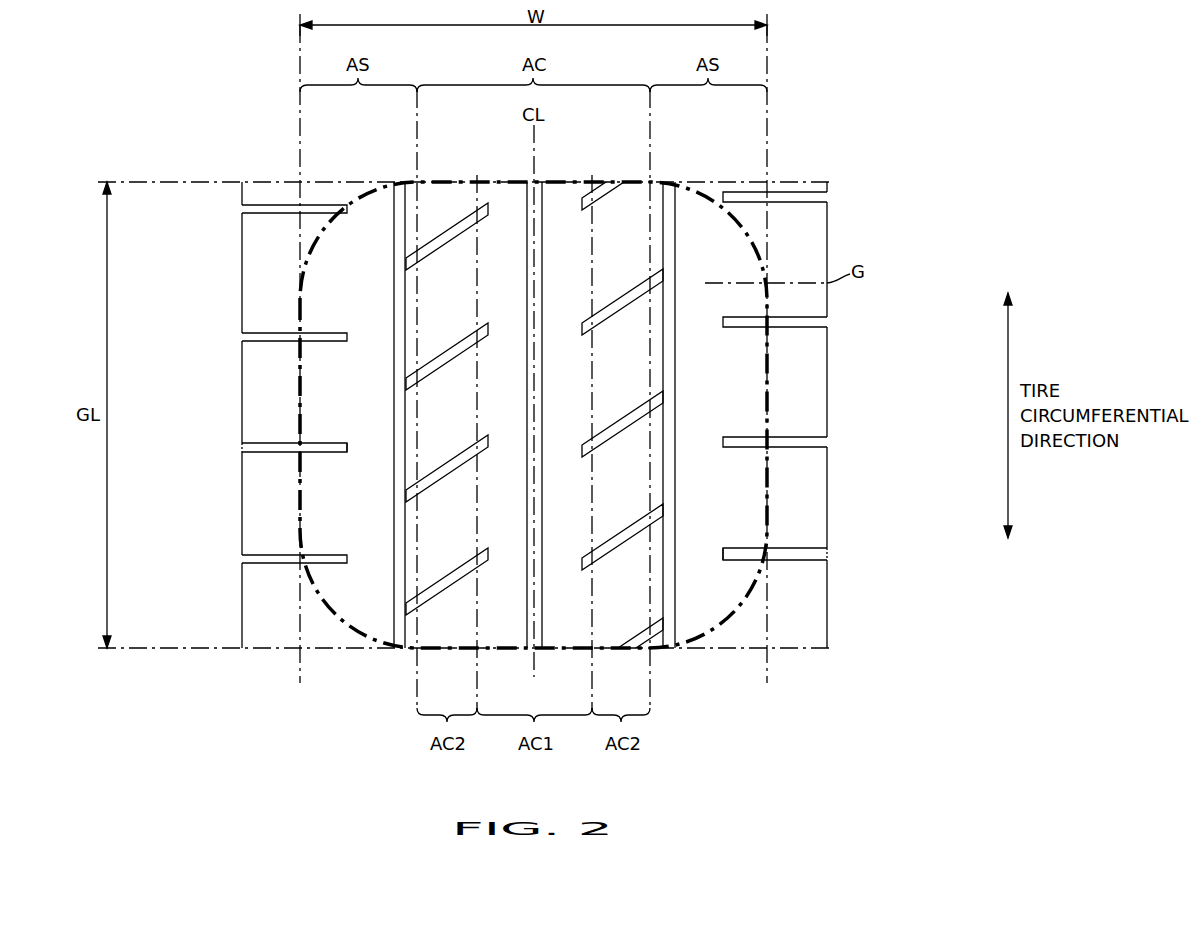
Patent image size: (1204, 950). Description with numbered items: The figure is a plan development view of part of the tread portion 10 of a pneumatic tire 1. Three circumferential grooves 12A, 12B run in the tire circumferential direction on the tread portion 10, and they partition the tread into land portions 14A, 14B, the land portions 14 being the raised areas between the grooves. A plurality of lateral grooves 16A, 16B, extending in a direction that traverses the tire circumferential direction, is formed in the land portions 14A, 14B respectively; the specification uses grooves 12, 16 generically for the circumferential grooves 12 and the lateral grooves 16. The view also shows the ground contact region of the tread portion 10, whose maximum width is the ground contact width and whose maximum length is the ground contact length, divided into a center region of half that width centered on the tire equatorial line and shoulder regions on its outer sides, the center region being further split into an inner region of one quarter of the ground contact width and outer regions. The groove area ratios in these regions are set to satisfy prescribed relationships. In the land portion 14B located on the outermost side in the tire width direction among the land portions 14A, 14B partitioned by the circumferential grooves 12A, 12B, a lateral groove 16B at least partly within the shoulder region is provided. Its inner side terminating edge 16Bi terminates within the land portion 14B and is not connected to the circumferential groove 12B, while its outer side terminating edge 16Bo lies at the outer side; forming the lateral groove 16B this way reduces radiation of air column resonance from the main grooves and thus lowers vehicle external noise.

The pneumatic tire 1 is at (966, 70).
The tread portion 10 is at (731, 400).
The circumferential groove 12 is at (532, 387).
The circumferential groove 12A is at (540, 228).
The circumferential groove 12B is at (393, 232).
The land portion 14 is at (573, 433).
The land portion 14A is at (440, 632).
The land portion 14B is at (343, 295).
The lateral groove 16 is at (555, 428).
The lateral groove 16A is at (438, 478).
The lateral groove 16B is at (267, 452).
The inner side terminating edge 16Bi is at (346, 448).
The outer side terminating edge 16Bo is at (242, 452).